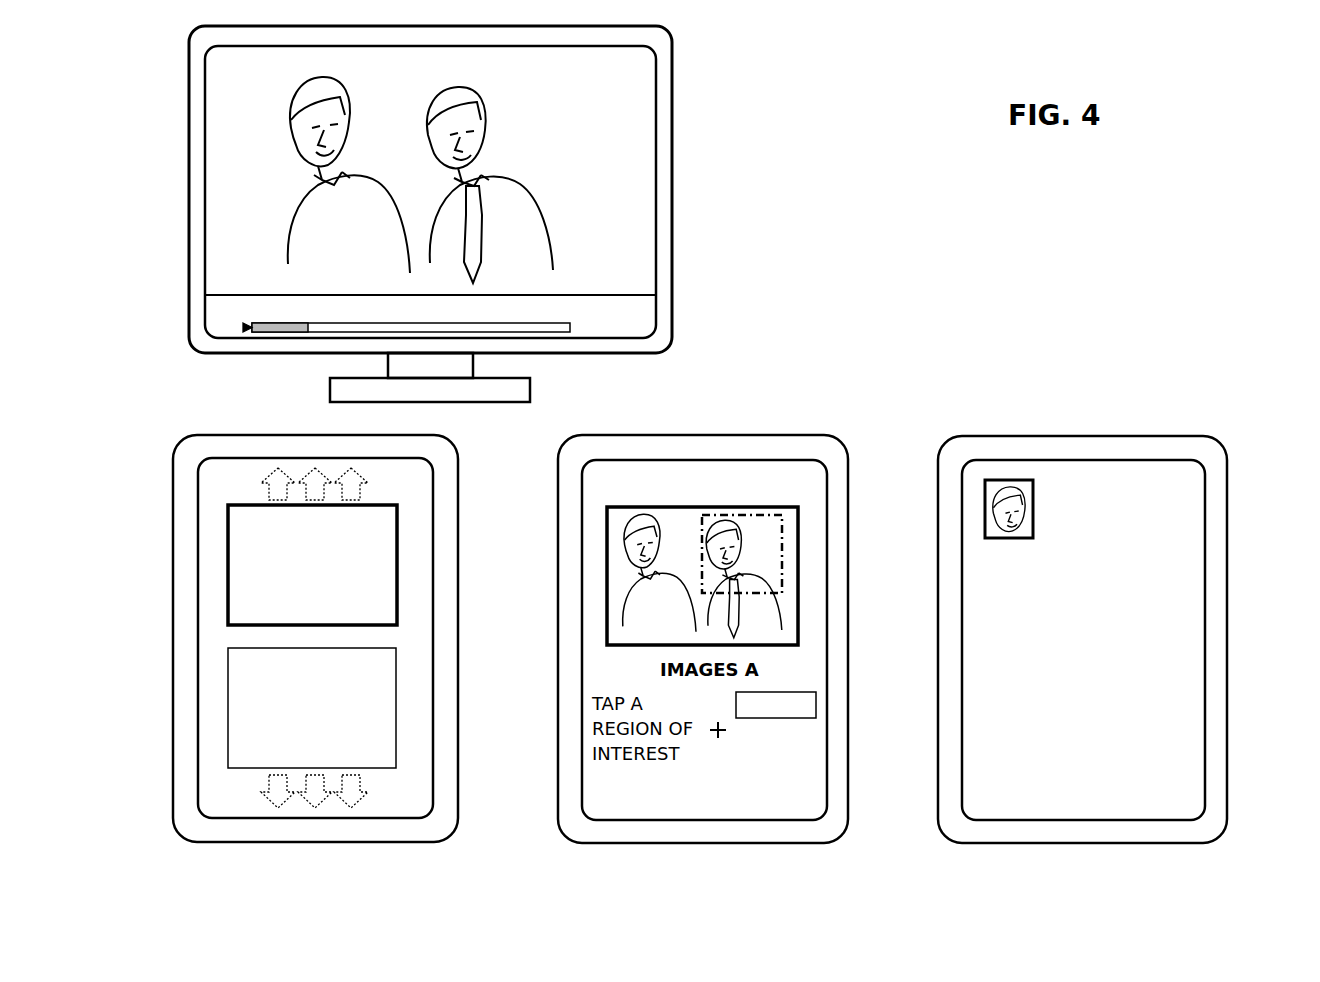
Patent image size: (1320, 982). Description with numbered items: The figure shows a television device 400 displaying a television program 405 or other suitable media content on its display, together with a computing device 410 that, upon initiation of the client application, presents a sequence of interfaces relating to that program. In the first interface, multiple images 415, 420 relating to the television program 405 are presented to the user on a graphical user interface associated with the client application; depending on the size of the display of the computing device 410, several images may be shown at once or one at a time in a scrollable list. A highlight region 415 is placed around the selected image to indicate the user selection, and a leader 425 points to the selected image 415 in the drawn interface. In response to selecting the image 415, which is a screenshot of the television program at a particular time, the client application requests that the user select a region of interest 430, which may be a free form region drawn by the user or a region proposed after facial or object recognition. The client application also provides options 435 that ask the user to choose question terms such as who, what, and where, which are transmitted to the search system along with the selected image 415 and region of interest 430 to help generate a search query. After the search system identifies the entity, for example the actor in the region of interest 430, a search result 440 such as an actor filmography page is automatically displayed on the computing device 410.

The television device 400 is at (672, 192).
The television program 405 is at (592, 88).
The computing device 410 is at (457, 640).
The image 415 is at (356, 613).
The image 420 is at (366, 756).
The selected image 425 is at (397, 590).
The region of interest 430 is at (757, 507).
The options 435 is at (730, 761).
The search result 440 is at (1145, 514).